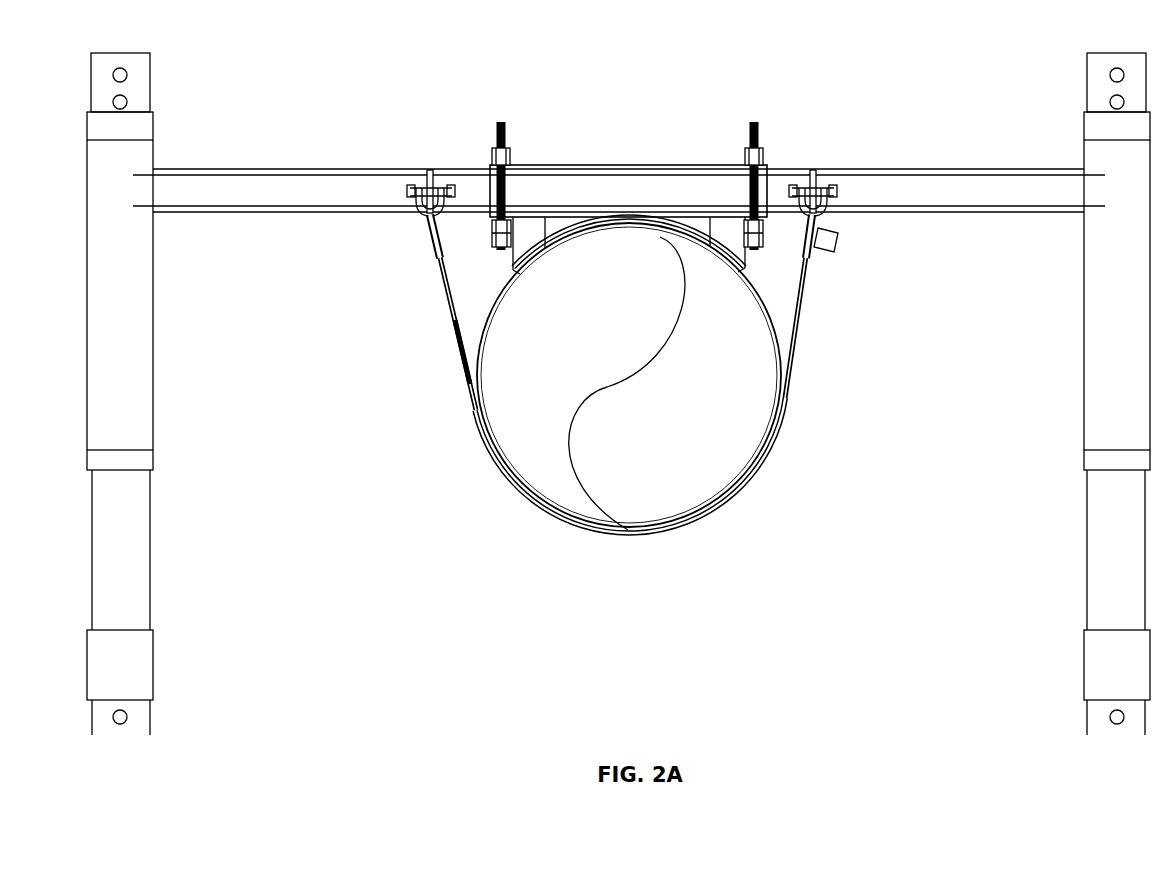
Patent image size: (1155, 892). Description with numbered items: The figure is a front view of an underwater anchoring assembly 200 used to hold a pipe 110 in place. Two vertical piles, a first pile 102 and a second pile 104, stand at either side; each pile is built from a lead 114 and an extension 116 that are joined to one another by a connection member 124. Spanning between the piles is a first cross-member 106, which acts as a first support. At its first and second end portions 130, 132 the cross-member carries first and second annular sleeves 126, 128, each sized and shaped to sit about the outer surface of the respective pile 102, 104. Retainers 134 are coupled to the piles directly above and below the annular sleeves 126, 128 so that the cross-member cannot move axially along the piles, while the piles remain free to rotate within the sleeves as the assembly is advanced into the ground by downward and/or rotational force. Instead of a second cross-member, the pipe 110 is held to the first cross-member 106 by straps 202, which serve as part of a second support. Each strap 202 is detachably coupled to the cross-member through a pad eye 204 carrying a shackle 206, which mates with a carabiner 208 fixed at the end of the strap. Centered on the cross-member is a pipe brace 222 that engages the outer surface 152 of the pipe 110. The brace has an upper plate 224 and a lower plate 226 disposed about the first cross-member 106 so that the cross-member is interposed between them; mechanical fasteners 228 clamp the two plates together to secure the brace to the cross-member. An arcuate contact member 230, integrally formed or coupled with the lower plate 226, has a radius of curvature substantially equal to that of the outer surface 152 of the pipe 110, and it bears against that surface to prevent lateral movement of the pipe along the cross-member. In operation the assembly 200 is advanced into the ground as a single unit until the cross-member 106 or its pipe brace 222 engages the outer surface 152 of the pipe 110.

The first pile 102 is at (1020, 688).
The second pile 104 is at (185, 662).
The first cross-member 106 is at (355, 162).
The pipe 110 is at (635, 347).
The lead 114 is at (140, 717).
The extension 116 is at (130, 553).
The connection member 124 is at (150, 645).
The first annular sleeve 126 is at (1095, 288).
The second annular sleeve 128 is at (135, 285).
The first end portion 130 is at (1055, 162).
The second end portion 132 is at (200, 162).
The retainer 134 is at (155, 122).
The outer surface 152 is at (480, 328).
The underwater anchoring assembly 200 is at (582, 65).
The strap 202 is at (796, 338).
The pad eye 204 is at (430, 173).
The shackle 206 is at (412, 214).
The carabiner 208 is at (423, 240).
The pipe brace 222 is at (738, 115).
The upper plate 224 is at (682, 163).
The lower plate 226 is at (783, 383).
The mechanical fastener 228 is at (495, 128).
The arcuate contact member 230 is at (581, 246).